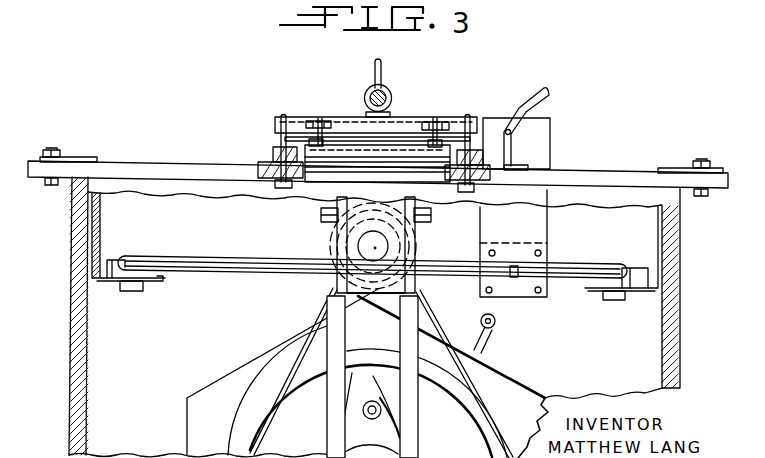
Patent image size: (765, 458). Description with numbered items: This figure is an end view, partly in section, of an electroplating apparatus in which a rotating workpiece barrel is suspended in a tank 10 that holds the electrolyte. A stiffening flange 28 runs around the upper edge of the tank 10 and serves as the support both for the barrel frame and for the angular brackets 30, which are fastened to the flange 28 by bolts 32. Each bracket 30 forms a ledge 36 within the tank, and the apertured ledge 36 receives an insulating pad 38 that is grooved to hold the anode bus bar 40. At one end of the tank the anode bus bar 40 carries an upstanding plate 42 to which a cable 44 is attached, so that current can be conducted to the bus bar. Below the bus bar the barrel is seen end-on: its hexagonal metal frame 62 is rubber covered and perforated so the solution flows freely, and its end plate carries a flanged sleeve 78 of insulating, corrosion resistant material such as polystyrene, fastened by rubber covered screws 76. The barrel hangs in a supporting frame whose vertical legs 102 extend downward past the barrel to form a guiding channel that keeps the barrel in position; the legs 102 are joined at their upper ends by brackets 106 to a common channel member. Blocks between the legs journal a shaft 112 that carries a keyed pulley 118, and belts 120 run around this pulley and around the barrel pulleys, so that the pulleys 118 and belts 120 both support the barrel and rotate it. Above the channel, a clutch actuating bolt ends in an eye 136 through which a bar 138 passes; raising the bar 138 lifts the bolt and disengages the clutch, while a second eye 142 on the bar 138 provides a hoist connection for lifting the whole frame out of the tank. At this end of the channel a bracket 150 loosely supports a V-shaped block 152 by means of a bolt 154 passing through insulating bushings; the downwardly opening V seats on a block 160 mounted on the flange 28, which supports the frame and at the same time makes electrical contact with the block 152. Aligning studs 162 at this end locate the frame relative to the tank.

The tank 10 is at (680, 345).
The stiffening flange 28 is at (685, 214).
The brackets 30 is at (78, 157).
The bolts 32 is at (50, 150).
The ledge 36 is at (120, 291).
The insulating pad 38 is at (112, 259).
The anode bus bar 40 is at (229, 256).
The upstanding plate 42 is at (540, 158).
The cable 44 is at (545, 98).
The metal frame 62 is at (250, 362).
The rubber covered screws 76 is at (380, 400).
The flanged sleeve 78 is at (347, 373).
The legs 102 is at (334, 414).
The brackets 106 is at (331, 211).
The shaft 112 is at (360, 245).
The pulley 118 is at (418, 252).
The belts 120 is at (302, 315).
The eye 136 is at (366, 92).
The bar 138 is at (391, 95).
The eye 142 is at (383, 70).
The bracket 150 is at (398, 118).
The V-shaped block 152 is at (270, 134).
The bolt 154 is at (320, 120).
The block 160 is at (266, 152).
The aligning studs 162 is at (291, 101).